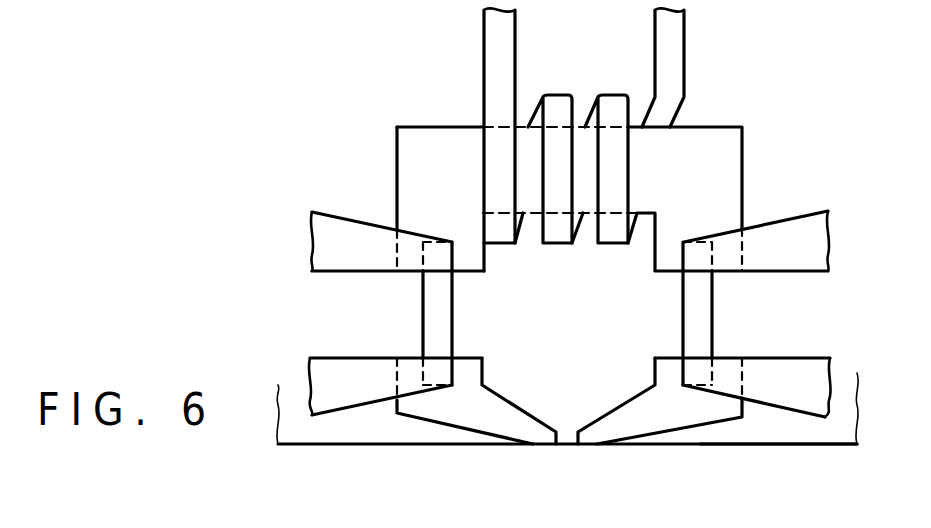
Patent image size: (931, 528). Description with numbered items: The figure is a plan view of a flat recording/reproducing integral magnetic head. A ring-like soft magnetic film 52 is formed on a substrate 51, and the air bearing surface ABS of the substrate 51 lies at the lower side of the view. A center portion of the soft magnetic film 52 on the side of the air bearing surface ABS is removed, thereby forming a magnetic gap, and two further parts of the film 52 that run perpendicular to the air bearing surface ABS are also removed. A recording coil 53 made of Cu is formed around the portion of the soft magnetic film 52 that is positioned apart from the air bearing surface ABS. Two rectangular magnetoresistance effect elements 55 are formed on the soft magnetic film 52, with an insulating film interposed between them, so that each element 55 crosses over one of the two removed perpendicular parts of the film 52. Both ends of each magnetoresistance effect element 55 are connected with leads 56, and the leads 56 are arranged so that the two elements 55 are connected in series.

The substrate 51 is at (350, 428).
The soft magnetic film 52 is at (428, 150).
The recording coil 53 is at (672, 72).
The magnetoresistance effect elements 55 is at (692, 305).
The leads 56 is at (342, 237).
The air bearing surface ABS is at (785, 444).